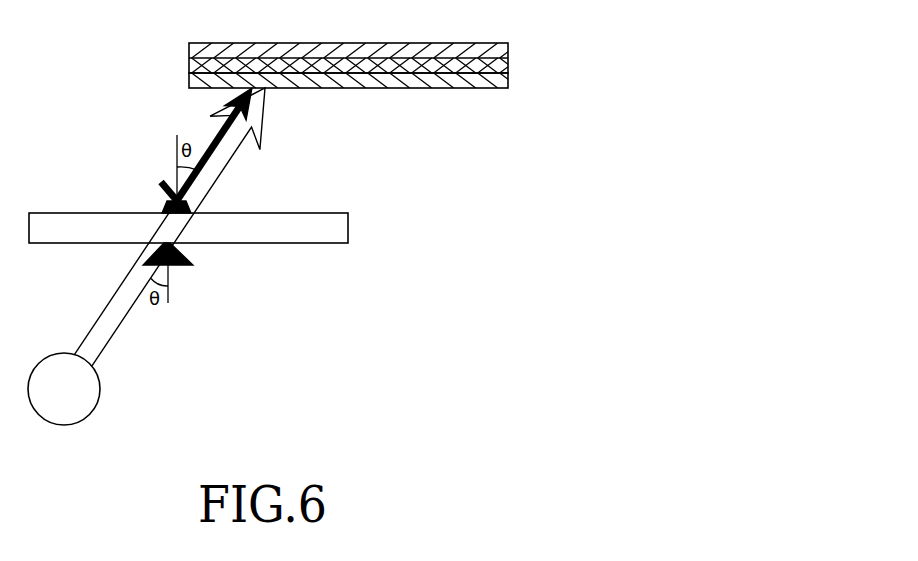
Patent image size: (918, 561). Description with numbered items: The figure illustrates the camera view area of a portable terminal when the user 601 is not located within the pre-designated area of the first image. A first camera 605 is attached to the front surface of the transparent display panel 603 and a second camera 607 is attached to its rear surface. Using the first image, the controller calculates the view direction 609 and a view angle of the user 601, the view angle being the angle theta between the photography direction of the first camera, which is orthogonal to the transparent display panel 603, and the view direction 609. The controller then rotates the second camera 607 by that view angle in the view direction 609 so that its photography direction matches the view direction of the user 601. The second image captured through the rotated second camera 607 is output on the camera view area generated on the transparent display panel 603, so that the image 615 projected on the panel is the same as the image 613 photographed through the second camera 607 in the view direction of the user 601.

The user 601 is at (93, 410).
The transparent display panel 603 is at (348, 226).
The first camera 605 is at (195, 265).
The second camera 607 is at (162, 184).
The view direction 609 is at (118, 328).
The image photographed through the second camera 613 is at (189, 51).
The image projected on the transparent display panel 615 is at (508, 73).